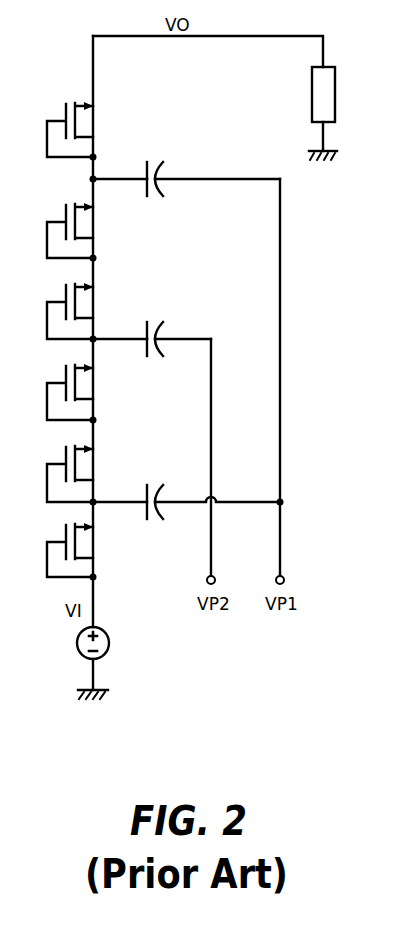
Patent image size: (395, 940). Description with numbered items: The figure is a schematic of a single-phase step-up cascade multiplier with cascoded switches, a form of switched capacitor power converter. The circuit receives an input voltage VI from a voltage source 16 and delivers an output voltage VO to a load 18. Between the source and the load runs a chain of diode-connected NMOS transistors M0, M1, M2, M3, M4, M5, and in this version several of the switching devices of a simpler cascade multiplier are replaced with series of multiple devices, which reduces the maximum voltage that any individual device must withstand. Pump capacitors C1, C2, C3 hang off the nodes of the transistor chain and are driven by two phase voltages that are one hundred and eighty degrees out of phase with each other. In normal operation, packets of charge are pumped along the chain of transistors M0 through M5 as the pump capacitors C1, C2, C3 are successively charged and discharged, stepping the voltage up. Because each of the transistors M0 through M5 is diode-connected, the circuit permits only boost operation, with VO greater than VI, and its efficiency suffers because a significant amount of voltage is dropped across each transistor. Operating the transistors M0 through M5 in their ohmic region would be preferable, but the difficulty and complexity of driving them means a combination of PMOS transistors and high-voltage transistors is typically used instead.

The voltage source 16 is at (109, 641).
The load 18 is at (312, 95).
The NMOS transistor M0 is at (61, 548).
The NMOS transistor M1 is at (61, 471).
The NMOS transistor M2 is at (61, 390).
The NMOS transistor M3 is at (61, 309).
The NMOS transistor M4 is at (61, 228).
The NMOS transistor M5 is at (61, 127).
The pump capacitor C1 is at (186, 513).
The pump capacitor C2 is at (152, 351).
The pump capacitor C3 is at (186, 190).